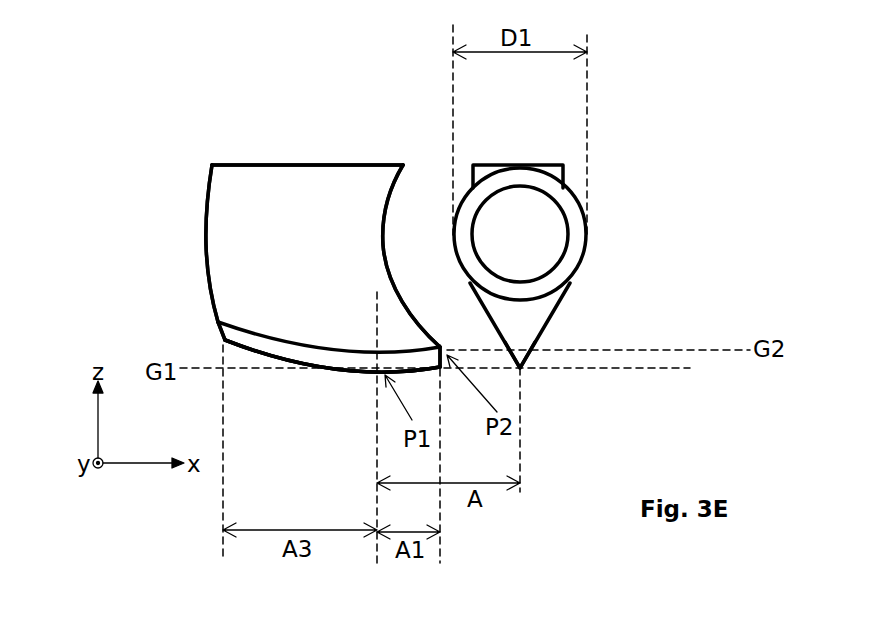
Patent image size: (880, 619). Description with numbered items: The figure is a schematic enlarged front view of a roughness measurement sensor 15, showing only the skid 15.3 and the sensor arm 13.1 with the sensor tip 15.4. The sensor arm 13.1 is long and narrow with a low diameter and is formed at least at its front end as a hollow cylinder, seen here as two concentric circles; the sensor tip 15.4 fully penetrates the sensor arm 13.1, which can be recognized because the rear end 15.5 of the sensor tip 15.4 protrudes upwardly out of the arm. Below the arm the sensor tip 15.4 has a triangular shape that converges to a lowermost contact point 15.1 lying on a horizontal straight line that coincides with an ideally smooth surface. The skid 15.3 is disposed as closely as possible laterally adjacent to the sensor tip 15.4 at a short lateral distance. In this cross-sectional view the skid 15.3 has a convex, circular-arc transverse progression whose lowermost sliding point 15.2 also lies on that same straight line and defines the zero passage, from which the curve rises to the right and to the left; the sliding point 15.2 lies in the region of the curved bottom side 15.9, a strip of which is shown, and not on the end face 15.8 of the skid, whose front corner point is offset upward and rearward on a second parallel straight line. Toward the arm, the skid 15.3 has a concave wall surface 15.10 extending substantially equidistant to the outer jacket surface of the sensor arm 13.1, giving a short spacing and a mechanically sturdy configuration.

The roughness measurement sensor 15 is at (132, 137).
The lowermost contact point 15.1 is at (520, 368).
The lowermost sliding point 15.2 is at (377, 372).
The skid 15.3 is at (285, 165).
The sensor tip 15.4 is at (535, 305).
The rear end 15.5 is at (553, 165).
The end face 15.8 is at (232, 195).
The curved bottom side 15.9 is at (237, 338).
The concave wall surface 15.10 is at (405, 215).
The sensor arm 13.1 is at (577, 225).